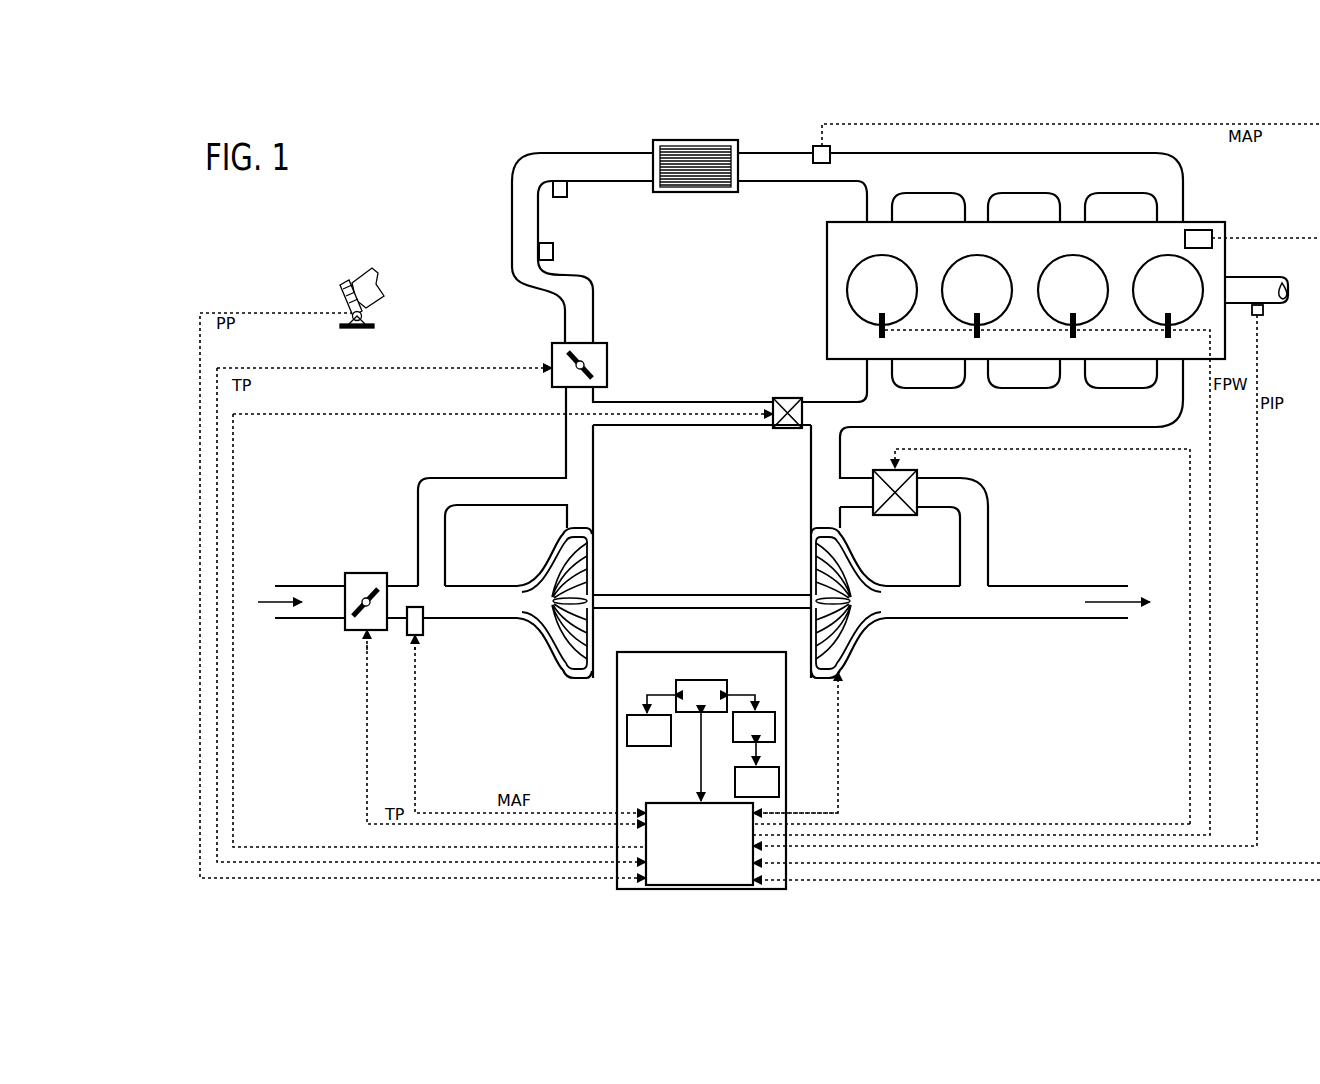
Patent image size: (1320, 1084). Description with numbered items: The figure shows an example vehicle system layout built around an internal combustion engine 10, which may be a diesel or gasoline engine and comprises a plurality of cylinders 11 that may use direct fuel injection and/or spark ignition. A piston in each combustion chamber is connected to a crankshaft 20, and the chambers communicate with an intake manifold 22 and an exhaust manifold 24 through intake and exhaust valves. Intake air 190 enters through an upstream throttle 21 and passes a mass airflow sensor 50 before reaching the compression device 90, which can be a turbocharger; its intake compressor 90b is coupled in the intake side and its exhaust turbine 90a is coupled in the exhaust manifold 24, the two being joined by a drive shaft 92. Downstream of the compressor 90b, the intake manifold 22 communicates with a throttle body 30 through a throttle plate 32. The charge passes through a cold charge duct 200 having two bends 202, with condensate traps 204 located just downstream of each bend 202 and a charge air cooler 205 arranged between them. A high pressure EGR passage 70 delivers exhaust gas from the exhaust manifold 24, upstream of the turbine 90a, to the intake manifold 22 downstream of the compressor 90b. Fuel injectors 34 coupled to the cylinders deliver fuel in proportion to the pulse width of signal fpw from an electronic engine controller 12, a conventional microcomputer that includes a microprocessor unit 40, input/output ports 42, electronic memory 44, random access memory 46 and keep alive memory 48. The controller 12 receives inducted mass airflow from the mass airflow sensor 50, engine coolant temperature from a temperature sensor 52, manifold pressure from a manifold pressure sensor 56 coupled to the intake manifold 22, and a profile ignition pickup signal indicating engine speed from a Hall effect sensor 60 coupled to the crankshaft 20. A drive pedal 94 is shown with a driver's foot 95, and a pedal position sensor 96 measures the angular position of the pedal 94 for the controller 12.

The internal combustion engine 10 is at (1038, 345).
The cylinders 11 is at (1025, 290).
The electronic engine controller 12 is at (685, 770).
The crankshaft 20 is at (1262, 277).
The air intake system throttle 21 is at (347, 573).
The intake manifold 22 is at (1024, 192).
The exhaust manifold 24 is at (1011, 443).
The throttle body 30 is at (575, 358).
The throttle plate 32 is at (596, 380).
The fuel injectors 34 is at (1163, 336).
The microprocessor unit 40 is at (672, 688).
The input/output ports 42 is at (699, 844).
The electronic memory 44 is at (627, 738).
The random access memory 46 is at (775, 715).
The keep alive memory 48 is at (779, 769).
The mass airflow sensor 50 is at (425, 633).
The temperature sensor 52 is at (1202, 228).
The manifold pressure sensor 56 is at (831, 150).
The Hall effect sensor 60 is at (1262, 317).
The high pressure EGR passage 70 is at (684, 402).
The compression device 90 is at (709, 559).
The exhaust turbine 90a is at (850, 563).
The intake compressor 90b is at (548, 643).
The drive shaft 92 is at (636, 594).
The drive pedal 94 is at (367, 291).
The driver's foot 95 is at (382, 275).
The pedal position sensor 96 is at (364, 314).
The intake air 190 is at (387, 602).
The cold charge duct 200 is at (512, 222).
The bends 202 is at (537, 160).
The condensate traps 204 is at (566, 198).
The charge air cooler 205 is at (735, 141).